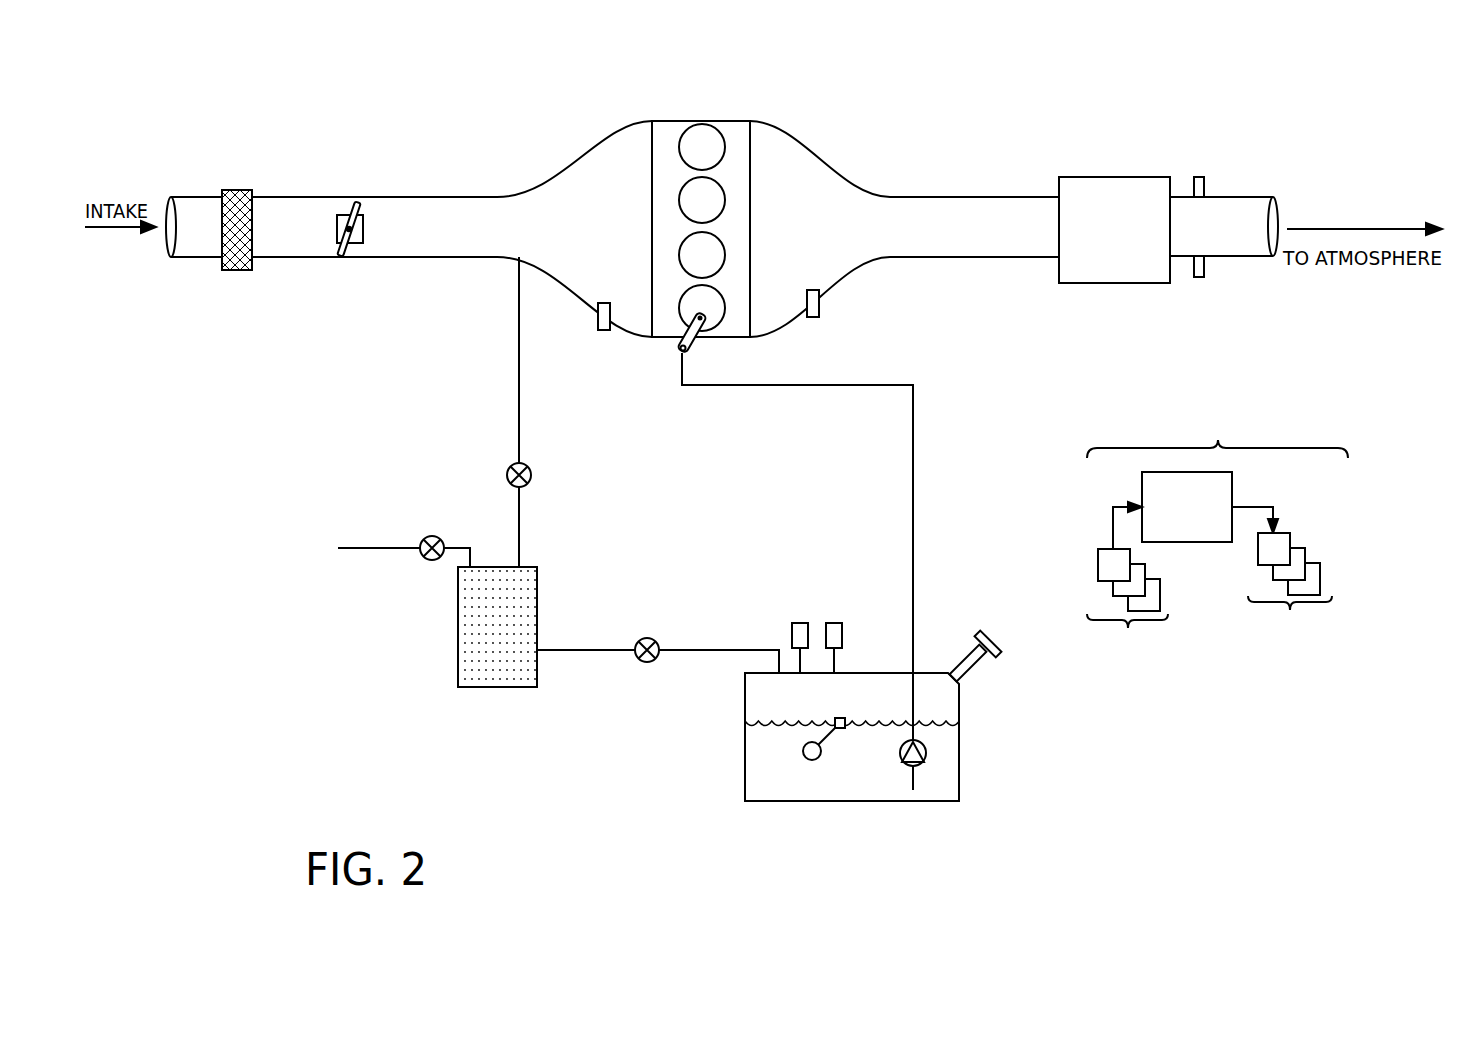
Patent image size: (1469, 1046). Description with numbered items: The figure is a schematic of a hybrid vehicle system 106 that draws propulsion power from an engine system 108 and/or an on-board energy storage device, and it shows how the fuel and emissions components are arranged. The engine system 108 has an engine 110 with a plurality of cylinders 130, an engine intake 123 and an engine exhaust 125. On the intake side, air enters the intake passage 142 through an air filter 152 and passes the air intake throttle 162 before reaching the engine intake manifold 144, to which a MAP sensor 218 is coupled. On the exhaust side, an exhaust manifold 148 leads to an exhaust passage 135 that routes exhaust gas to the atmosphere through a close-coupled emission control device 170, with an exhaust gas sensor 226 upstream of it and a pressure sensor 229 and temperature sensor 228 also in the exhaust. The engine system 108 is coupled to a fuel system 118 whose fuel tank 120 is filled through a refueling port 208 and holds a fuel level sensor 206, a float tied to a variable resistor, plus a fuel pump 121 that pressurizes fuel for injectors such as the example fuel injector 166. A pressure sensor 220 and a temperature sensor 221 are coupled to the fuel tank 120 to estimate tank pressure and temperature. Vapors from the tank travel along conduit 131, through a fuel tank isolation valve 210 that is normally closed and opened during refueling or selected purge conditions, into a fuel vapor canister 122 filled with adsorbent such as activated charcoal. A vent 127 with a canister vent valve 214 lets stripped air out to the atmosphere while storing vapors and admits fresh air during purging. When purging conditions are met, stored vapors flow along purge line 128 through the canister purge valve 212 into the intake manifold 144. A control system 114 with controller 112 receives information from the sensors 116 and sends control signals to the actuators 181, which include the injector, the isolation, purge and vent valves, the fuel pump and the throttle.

The hybrid vehicle system 106 is at (184, 94).
The engine system 108 is at (1308, 90).
The intake passage 142 is at (200, 260).
The air filter 152 is at (238, 190).
The air intake throttle 162 is at (363, 229).
The engine intake 123 is at (570, 138).
The engine intake manifold 144 is at (611, 239).
The engine 110 is at (750, 208).
The cylinders 130 is at (697, 125).
The exhaust manifold 148 is at (840, 239).
The engine exhaust 125 is at (874, 142).
The MAP sensor 218 is at (598, 316).
The exhaust gas sensor 226 is at (819, 295).
The fuel injector 166 is at (700, 343).
The emission control device 170 is at (1100, 177).
The exhaust passage 135 is at (1248, 197).
The pressure sensor 229 is at (1199, 177).
The temperature sensor 228 is at (1199, 277).
The purge line 128 is at (521, 427).
The canister purge valve 212 is at (529, 470).
The vent 127 is at (403, 547).
The canister vent valve 214 is at (432, 536).
The fuel vapor canister 122 is at (470, 687).
The conduit 131 is at (700, 650).
The fuel tank isolation valve 210 is at (647, 638).
The fuel tank 120 is at (745, 803).
The fuel system 118 is at (1008, 832).
The temperature sensor 221 is at (800, 623).
The pressure sensor 220 is at (842, 635).
The refueling port 208 is at (986, 640).
The fuel level sensor 206 is at (843, 716).
The fuel pump 121 is at (926, 759).
The control system 114 is at (1217, 426).
The controller 112 is at (1195, 518).
The sensors 116 is at (1127, 610).
The actuators 181 is at (1290, 594).